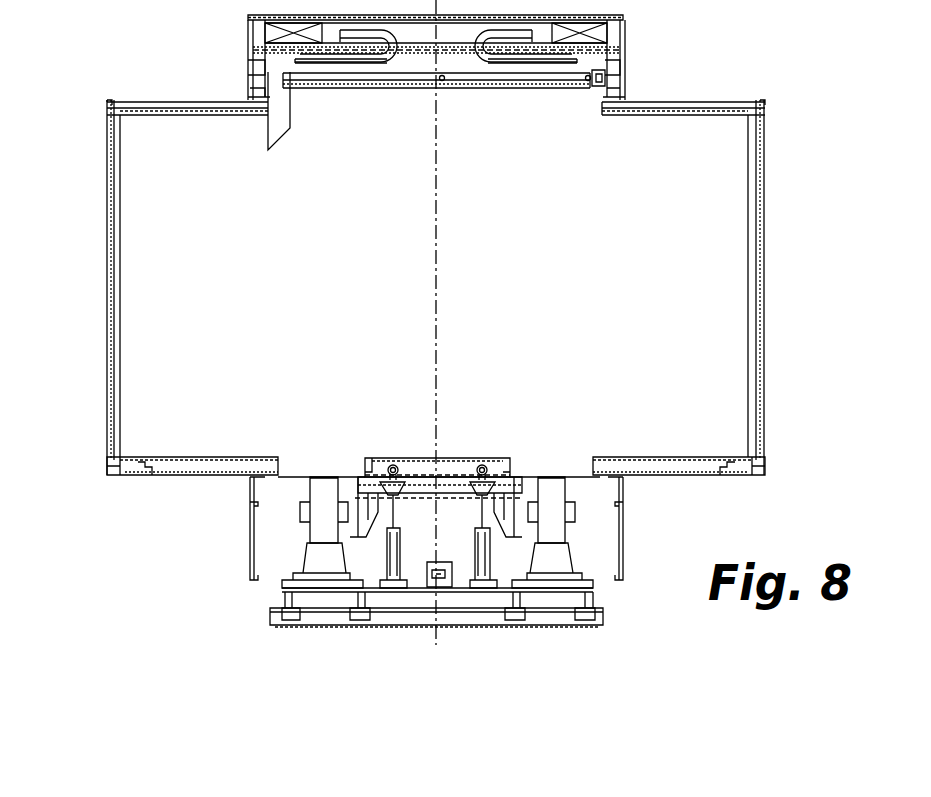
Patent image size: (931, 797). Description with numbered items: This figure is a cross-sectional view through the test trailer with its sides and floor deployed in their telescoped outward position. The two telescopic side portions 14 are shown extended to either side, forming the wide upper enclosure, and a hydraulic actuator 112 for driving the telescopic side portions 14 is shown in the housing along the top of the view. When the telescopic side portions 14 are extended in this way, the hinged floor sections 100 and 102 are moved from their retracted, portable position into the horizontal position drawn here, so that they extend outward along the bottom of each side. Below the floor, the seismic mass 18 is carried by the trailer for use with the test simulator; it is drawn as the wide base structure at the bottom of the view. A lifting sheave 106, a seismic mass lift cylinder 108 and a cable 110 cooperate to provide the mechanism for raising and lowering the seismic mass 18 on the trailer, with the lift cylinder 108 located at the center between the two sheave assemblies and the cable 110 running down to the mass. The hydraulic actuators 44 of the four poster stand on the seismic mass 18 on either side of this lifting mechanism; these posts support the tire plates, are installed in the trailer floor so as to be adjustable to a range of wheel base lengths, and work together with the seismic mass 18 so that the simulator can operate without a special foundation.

The telescopic side portions 14 is at (105, 243).
The seismic mass 18 is at (455, 598).
The hydraulic actuators 44 is at (327, 527).
The hinged floor section 100 is at (203, 468).
The hinged floor section 102 is at (679, 494).
The lifting sheave 106 is at (397, 552).
The seismic mass lift cylinder 108 is at (433, 573).
The cable 110 is at (492, 512).
The hydraulic actuator 112 is at (547, 74).